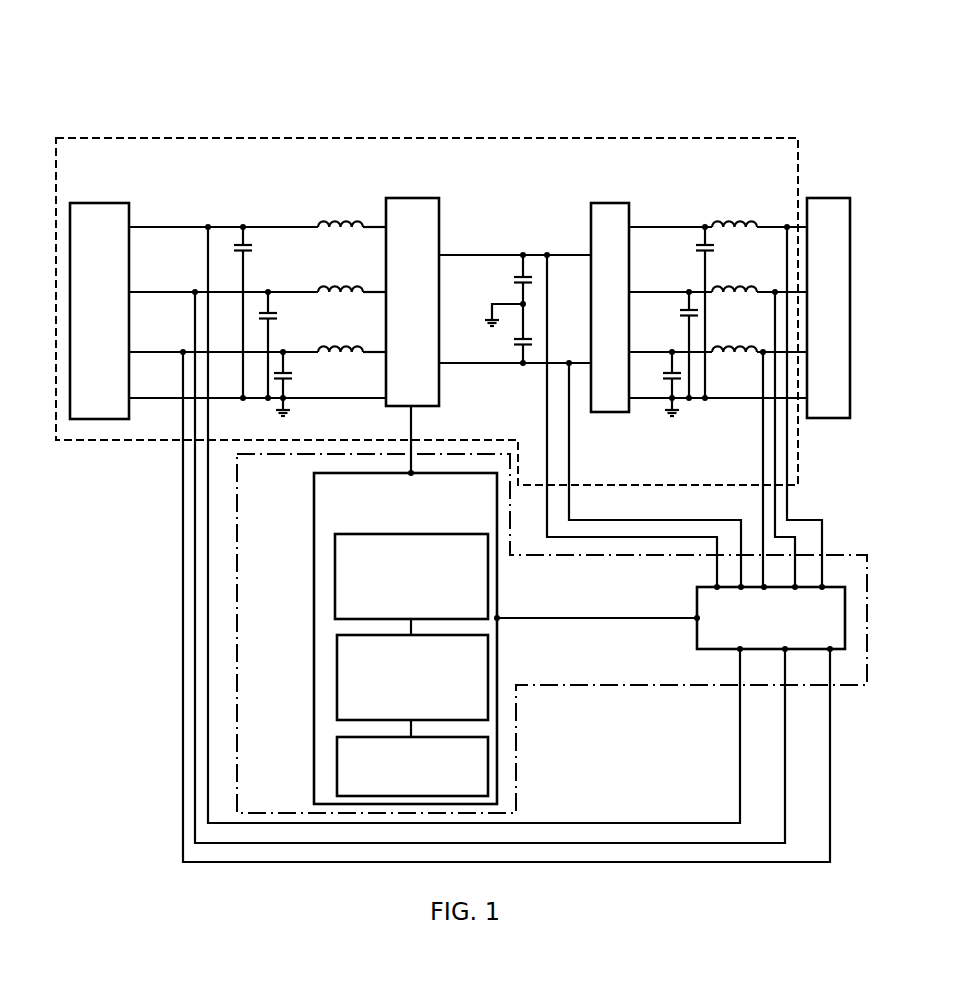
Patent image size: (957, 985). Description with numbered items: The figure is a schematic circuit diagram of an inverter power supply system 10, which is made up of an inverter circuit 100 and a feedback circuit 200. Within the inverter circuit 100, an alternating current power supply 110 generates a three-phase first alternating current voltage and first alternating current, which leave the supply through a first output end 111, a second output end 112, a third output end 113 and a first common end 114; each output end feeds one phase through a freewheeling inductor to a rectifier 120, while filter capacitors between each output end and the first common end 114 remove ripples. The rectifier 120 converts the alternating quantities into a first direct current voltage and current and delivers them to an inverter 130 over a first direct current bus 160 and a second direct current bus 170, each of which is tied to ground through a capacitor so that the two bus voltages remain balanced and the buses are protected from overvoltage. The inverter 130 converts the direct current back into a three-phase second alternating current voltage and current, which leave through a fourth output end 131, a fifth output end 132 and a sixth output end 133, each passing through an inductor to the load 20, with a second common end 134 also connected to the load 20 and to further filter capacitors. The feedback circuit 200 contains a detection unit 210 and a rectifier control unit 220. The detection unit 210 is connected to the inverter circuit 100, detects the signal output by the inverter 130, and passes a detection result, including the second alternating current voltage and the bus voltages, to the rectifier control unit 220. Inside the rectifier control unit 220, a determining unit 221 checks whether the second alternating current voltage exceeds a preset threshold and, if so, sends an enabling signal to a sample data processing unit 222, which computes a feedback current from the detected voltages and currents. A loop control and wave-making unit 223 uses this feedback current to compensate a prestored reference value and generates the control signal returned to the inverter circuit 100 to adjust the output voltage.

The inverter power supply system 10 is at (496, 22).
The inverter circuit 100 is at (368, 137).
The alternating current power supply 110 is at (102, 202).
The first output end 111 is at (146, 226).
The second output end 112 is at (144, 291).
The third output end 113 is at (144, 351).
The first common end 114 is at (144, 397).
The rectifier 120 is at (405, 198).
The first direct current bus 160 is at (463, 254).
The second direct current bus 170 is at (460, 365).
The inverter 130 is at (622, 202).
The fourth output end 131 is at (652, 226).
The fifth output end 132 is at (652, 291).
The sixth output end 133 is at (640, 351).
The second common end 134 is at (635, 399).
The load 20 is at (815, 198).
The feedback circuit 200 is at (617, 686).
The detection unit 210 is at (693, 624).
The rectifier control unit 220 is at (499, 675).
The determining unit 221 is at (337, 770).
The sample data processing unit 222 is at (337, 673).
The loop control and wave-making unit 223 is at (335, 574).